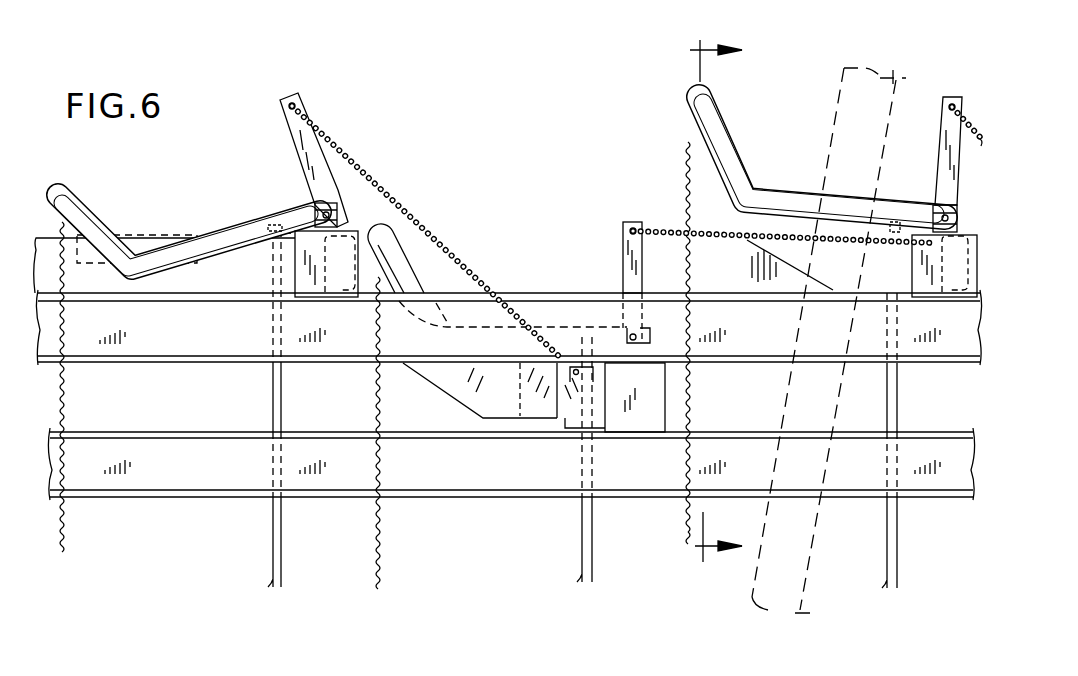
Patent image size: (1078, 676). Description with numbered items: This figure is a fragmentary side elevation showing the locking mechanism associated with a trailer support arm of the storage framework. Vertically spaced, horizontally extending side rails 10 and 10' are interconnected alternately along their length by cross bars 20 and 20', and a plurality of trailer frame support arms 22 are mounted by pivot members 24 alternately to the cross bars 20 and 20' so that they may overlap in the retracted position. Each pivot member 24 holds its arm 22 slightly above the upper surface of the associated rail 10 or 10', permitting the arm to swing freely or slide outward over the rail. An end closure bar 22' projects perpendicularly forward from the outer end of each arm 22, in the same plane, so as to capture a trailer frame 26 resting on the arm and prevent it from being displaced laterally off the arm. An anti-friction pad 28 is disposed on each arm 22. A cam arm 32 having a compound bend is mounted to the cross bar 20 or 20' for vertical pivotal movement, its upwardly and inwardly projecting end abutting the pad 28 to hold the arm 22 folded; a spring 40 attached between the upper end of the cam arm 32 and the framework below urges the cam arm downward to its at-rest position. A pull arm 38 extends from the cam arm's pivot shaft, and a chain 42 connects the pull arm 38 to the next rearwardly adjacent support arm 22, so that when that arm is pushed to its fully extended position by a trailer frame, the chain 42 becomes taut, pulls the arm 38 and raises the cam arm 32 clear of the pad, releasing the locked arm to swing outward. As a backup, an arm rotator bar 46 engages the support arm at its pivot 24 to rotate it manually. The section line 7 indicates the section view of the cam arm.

The section line 7- 7 is at (713, 300).
The upper side rail 10 is at (508, 346).
The lower side rail 10' is at (511, 494).
The cross bar 20 is at (640, 219).
The cross bar 20' is at (635, 422).
The trailer frame support arm 22 is at (317, 318).
The end closure bar 22' is at (612, 330).
The pivot member 24 is at (275, 225).
The trailer frame 26 is at (785, 388).
The anti-friction pad 28 is at (142, 233).
The cam arm 32 is at (92, 196).
The pull arm 38 is at (623, 256).
The spring 40 is at (66, 386).
The chain 42 is at (424, 229).
The arm rotator bar 46 is at (273, 398).